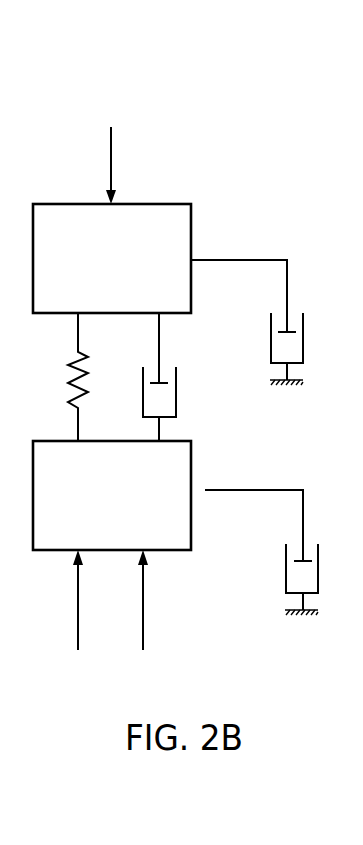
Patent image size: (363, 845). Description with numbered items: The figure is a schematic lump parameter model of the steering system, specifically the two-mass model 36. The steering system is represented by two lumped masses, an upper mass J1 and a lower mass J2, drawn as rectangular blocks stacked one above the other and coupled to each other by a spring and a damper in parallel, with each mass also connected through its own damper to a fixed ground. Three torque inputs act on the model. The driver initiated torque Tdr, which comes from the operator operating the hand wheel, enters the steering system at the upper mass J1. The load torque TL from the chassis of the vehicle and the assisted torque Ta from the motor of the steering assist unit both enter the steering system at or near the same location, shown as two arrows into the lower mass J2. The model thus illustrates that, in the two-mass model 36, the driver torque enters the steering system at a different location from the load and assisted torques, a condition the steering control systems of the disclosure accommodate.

The 2-mass model 36 is at (225, 93).
The first mass J1 is at (112, 258).
The second mass J2 is at (112, 495).
The driver initiated torque Tdr is at (110, 147).
The load torque TL is at (79, 618).
The assisted torque Ta is at (142, 618).